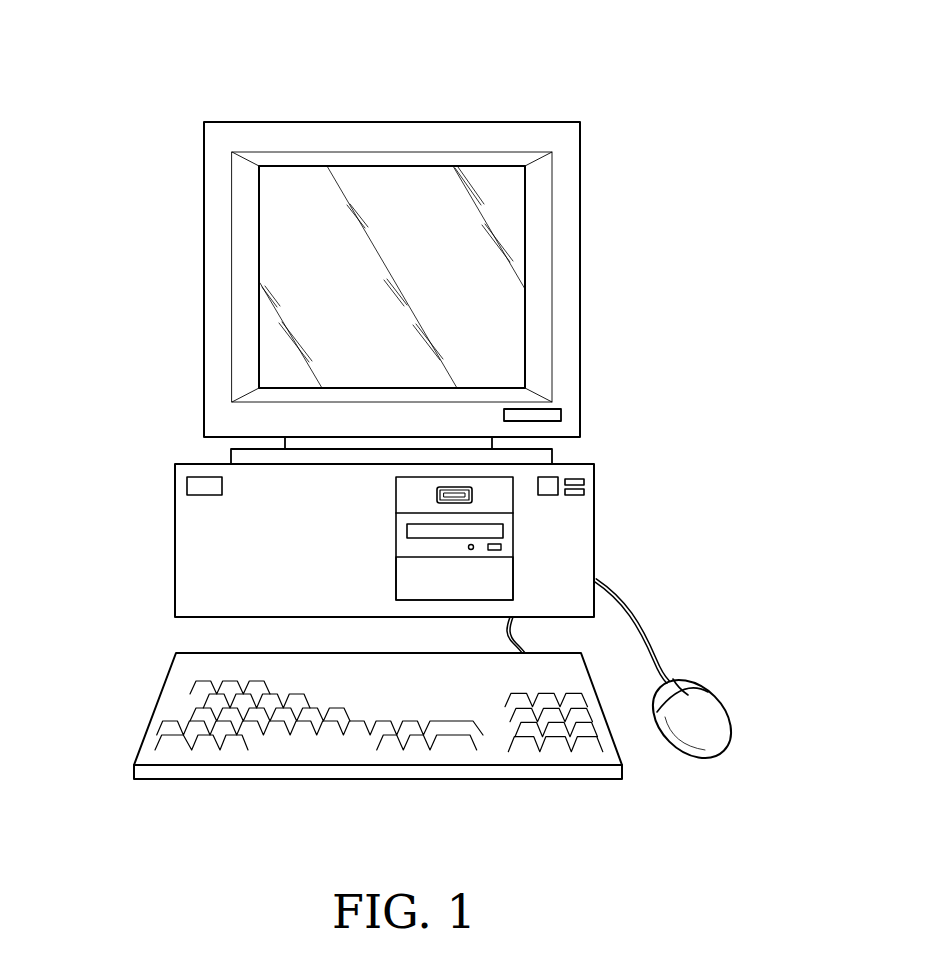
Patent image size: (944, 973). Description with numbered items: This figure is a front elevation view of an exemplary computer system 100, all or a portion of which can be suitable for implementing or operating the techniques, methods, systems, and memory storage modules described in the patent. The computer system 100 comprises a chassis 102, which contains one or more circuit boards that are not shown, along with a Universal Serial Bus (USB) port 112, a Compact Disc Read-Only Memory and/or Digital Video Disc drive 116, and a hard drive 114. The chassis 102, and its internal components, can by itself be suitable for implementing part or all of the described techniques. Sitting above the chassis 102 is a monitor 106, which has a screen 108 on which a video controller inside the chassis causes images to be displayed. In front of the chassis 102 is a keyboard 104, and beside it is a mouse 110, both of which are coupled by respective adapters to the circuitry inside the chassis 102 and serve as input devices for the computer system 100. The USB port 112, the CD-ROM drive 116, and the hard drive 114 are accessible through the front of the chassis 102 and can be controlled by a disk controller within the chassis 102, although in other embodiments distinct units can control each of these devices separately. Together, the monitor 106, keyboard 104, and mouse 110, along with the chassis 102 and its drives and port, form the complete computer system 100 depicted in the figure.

The computer system 100 is at (572, 100).
The chassis 102 is at (175, 545).
The keyboard 104 is at (157, 702).
The monitor 106 is at (280, 122).
The screen 108 is at (307, 283).
The mouse 110 is at (710, 710).
The Universal Serial Bus (USB) port 112 is at (475, 490).
The hard drive 114 is at (505, 578).
The CD-ROM and/or DVD drive 116 is at (505, 536).